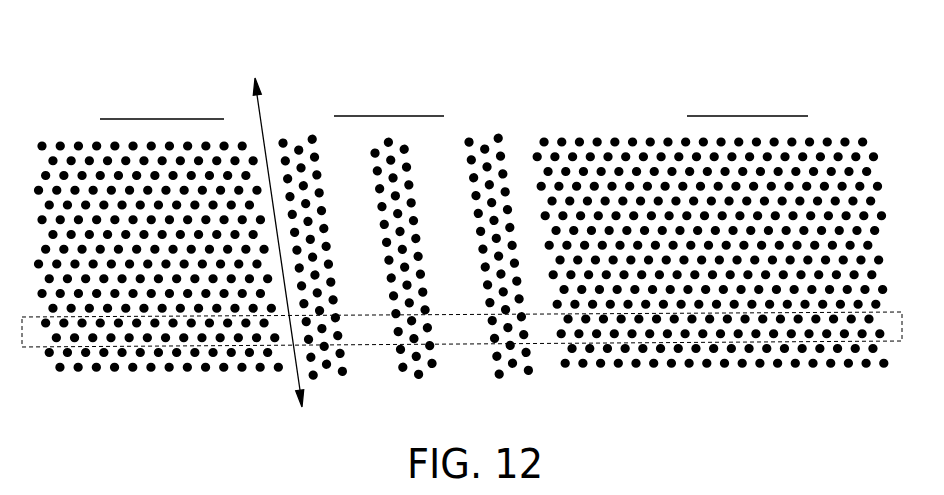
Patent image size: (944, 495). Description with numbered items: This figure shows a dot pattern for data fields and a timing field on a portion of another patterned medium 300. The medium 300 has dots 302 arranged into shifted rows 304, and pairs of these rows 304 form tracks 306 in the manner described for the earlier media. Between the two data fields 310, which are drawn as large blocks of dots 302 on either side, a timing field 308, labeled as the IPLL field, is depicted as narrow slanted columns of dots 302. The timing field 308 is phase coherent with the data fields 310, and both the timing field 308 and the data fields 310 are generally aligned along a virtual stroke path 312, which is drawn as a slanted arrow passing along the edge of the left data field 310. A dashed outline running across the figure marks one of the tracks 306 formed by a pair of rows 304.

The patterned medium 300 is at (702, 34).
The dots 302 is at (240, 141).
The shifted rows 304 is at (36, 144).
The tracks 306 is at (368, 346).
The timing field 308 is at (469, 97).
The data fields 310 is at (147, 85).
The virtual stroke path 312 is at (259, 107).